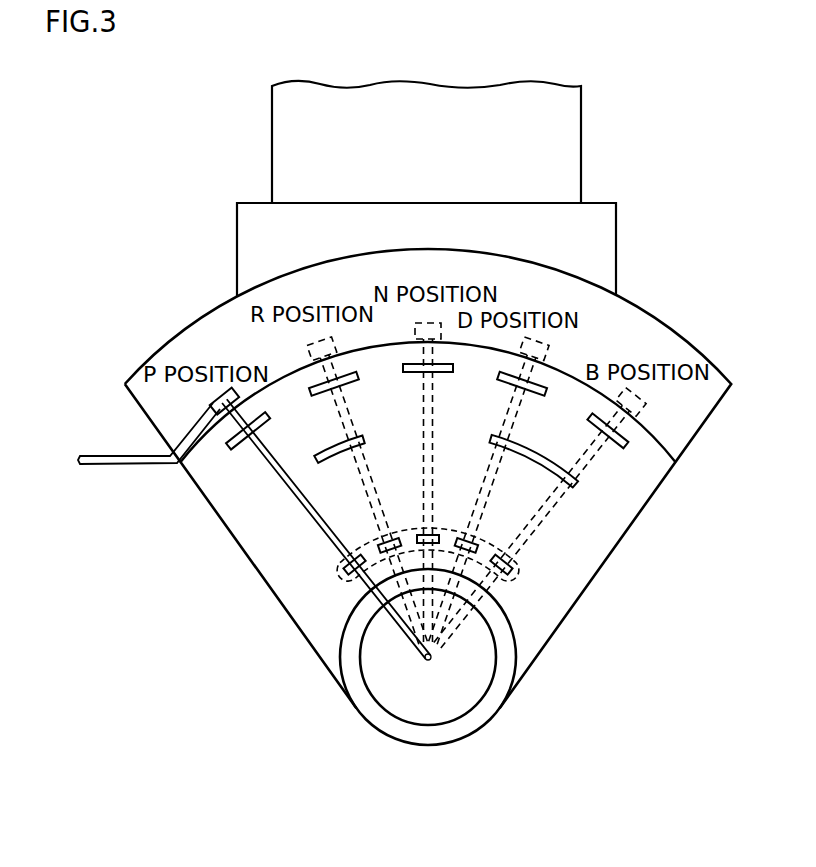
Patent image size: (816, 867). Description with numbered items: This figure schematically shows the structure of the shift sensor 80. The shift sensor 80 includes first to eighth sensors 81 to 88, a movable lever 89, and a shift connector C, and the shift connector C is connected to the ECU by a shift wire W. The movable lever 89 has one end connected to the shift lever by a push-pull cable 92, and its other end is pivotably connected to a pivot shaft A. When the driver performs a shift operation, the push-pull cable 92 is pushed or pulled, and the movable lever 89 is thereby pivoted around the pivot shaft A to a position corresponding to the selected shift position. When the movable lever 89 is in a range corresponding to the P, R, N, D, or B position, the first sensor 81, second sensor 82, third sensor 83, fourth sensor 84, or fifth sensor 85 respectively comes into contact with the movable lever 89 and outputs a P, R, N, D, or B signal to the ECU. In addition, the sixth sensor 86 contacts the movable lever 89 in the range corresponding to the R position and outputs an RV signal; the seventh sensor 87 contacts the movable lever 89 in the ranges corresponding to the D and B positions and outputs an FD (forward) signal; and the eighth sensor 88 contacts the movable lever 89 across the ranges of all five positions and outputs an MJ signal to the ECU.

The shift sensor 80 is at (568, 615).
The first sensor 81 is at (245, 445).
The second sensor 82 is at (318, 376).
The third sensor 83 is at (415, 363).
The fourth sensor 84 is at (540, 378).
The fifth sensor 85 is at (606, 445).
The sixth sensor 86 is at (313, 512).
The seventh sensor 87 is at (538, 470).
The eighth sensor 88 is at (525, 562).
The movable lever 89 is at (337, 458).
The push-pull cable 92 is at (100, 470).
The pivot shaft A is at (431, 660).
The shift connector C is at (617, 240).
The shift wire W is at (582, 141).